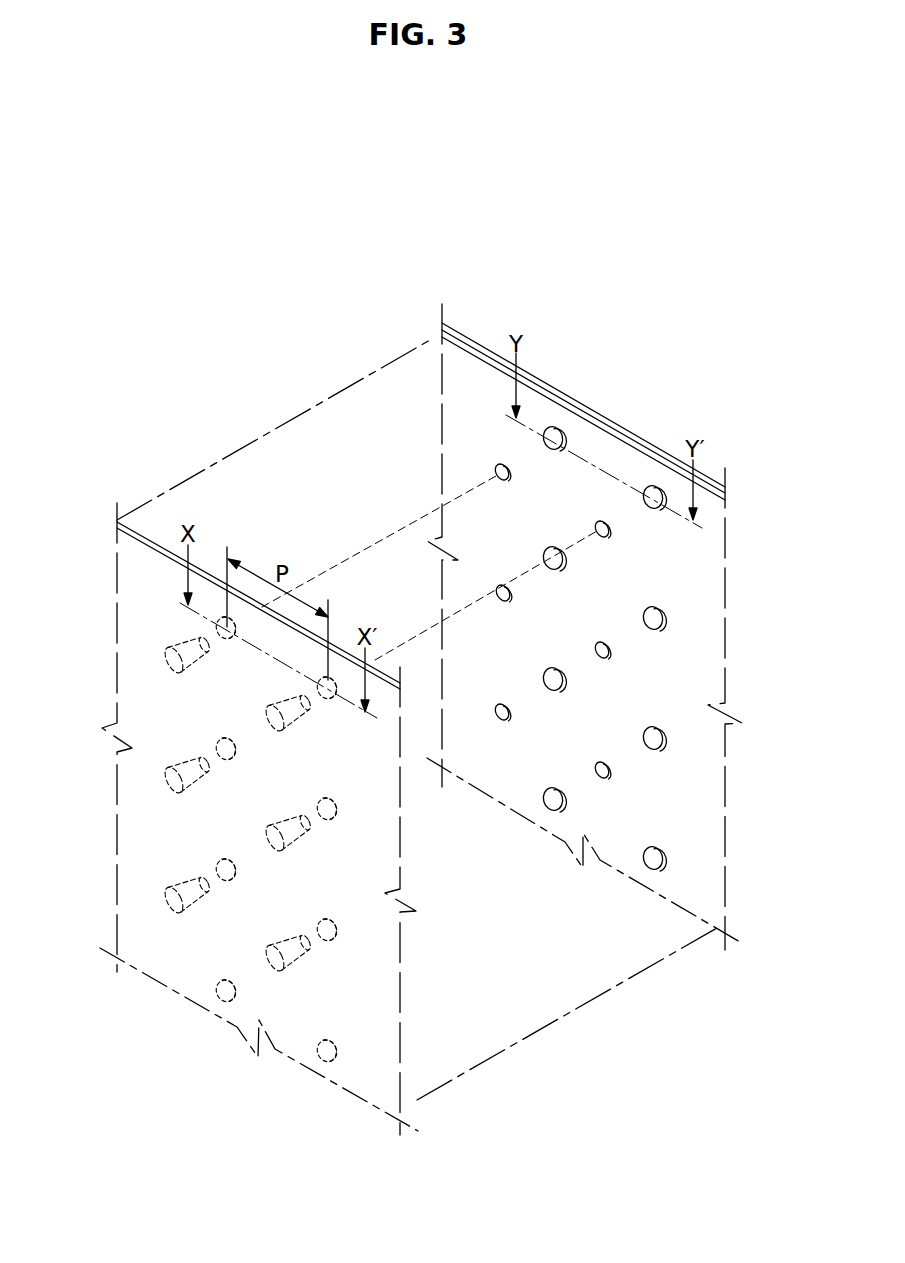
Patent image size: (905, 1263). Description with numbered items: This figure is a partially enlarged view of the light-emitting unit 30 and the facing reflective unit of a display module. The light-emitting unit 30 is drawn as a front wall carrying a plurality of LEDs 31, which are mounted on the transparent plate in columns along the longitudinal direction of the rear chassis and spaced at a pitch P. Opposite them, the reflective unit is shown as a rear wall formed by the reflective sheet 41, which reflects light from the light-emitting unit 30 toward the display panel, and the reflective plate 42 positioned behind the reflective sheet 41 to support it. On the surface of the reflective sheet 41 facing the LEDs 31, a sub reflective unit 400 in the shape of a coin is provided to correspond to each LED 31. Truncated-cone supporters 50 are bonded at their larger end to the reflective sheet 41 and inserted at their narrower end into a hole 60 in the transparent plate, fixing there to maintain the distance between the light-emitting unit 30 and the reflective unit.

The light-emitting unit 30 is at (377, 737).
The LEDs 31 is at (216, 750).
The supporters 50 is at (178, 644).
The hole 60 is at (496, 470).
The sub reflective unit 400 is at (662, 617).
The reflective sheet 41 is at (580, 413).
The reflective plate 42 is at (648, 445).